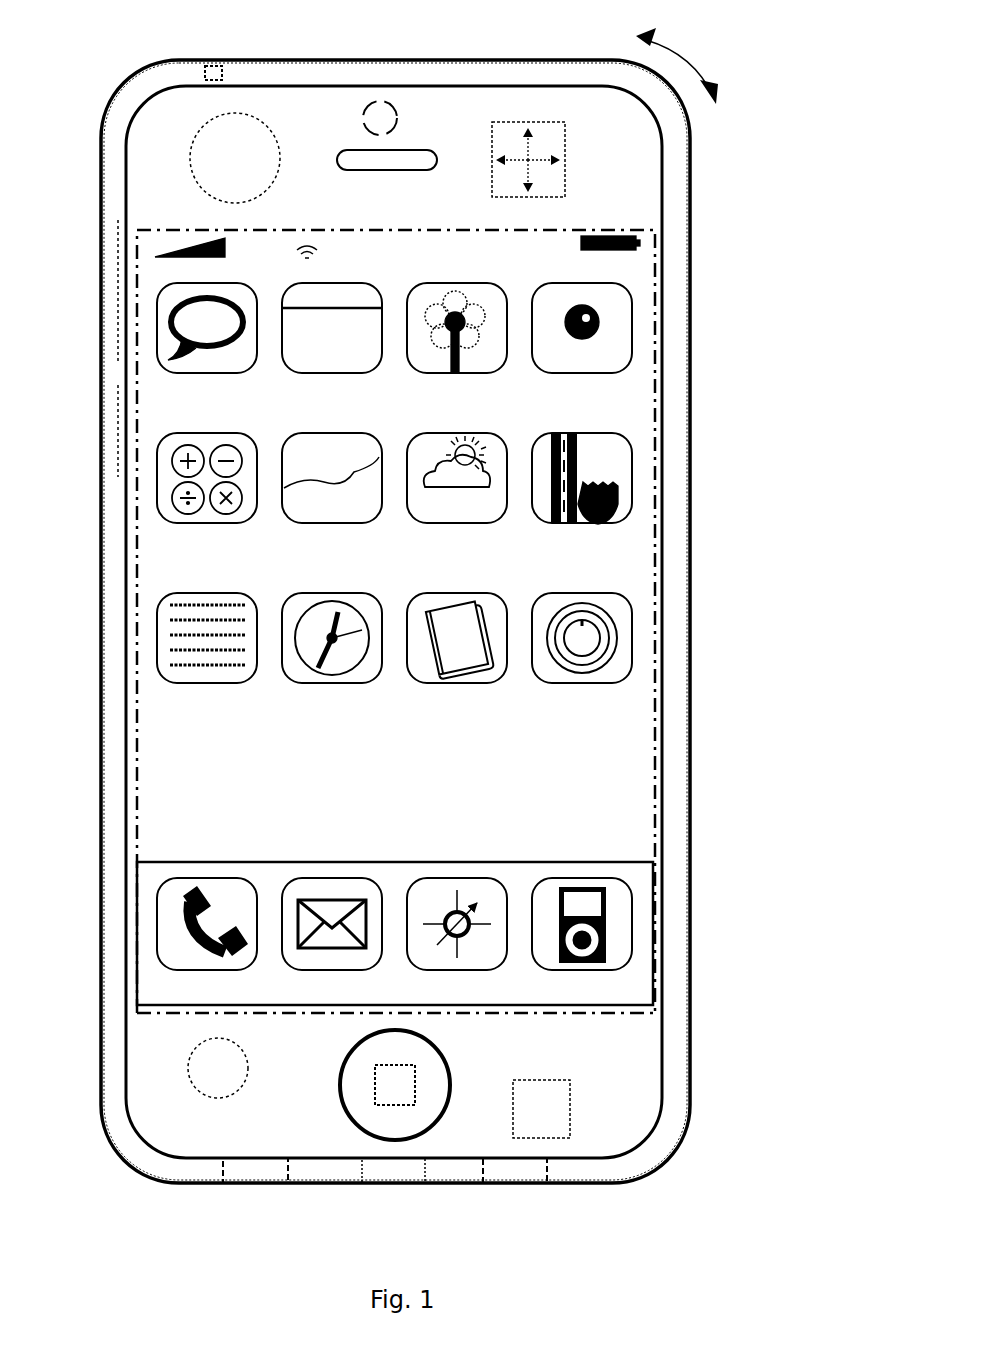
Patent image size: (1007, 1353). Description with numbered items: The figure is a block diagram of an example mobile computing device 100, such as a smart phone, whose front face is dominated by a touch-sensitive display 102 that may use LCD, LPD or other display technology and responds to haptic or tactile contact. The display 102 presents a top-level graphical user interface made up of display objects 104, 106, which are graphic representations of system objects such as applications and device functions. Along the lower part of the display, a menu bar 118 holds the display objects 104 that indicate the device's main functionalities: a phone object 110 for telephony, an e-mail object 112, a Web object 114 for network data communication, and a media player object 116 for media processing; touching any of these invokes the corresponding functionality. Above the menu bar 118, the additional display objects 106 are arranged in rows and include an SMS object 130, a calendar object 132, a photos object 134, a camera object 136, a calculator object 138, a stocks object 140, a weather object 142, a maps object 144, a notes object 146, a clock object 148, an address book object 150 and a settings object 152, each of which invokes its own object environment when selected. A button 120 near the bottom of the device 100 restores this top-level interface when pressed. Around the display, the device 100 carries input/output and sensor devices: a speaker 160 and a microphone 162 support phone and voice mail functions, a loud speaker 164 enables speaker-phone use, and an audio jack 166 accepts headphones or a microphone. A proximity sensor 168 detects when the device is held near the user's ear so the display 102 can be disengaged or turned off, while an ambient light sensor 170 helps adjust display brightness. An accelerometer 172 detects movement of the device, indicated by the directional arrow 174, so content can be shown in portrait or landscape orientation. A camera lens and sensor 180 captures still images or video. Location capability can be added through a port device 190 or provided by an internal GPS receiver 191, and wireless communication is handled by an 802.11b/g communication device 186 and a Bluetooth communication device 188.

The mobile computing device 100 is at (485, 60).
The touch-sensitive display 102 is at (592, 230).
The display objects 104 is at (642, 875).
The display objects 106 is at (640, 278).
The phone object 110 is at (210, 878).
The e-mail object 112 is at (332, 878).
The Web object 114 is at (457, 878).
The media player object 116 is at (582, 878).
The menu bar 118 is at (545, 1016).
The button 120 is at (450, 1085).
The short messaging service (SMS) object 130 is at (252, 370).
The calendar object 132 is at (377, 370).
The photos object 134 is at (500, 370).
The camera object 136 is at (627, 370).
The calculator object 138 is at (252, 520).
The stocks object 140 is at (377, 520).
The weather object 142 is at (500, 520).
The maps object 144 is at (627, 520).
The notes object 146 is at (252, 680).
The clock object 148 is at (377, 680).
The address book object 150 is at (500, 680).
The settings object 152 is at (627, 680).
The speaker 160 is at (368, 170).
The microphone 162 is at (290, 1183).
The loud speaker 164 is at (550, 1185).
The audio jack 166 is at (222, 70).
The proximity sensor 168 is at (192, 175).
The ambient light sensor 170 is at (238, 1090).
The accelerometer 172 is at (565, 160).
The directional arrow 174 is at (708, 72).
The camera lens and sensor 180 is at (397, 118).
The 802.11b/g communication device 186 is at (102, 220).
The Bluetooth communication device 188 is at (102, 380).
The port device 190 is at (440, 1185).
The GPS receiver 191 is at (570, 1090).